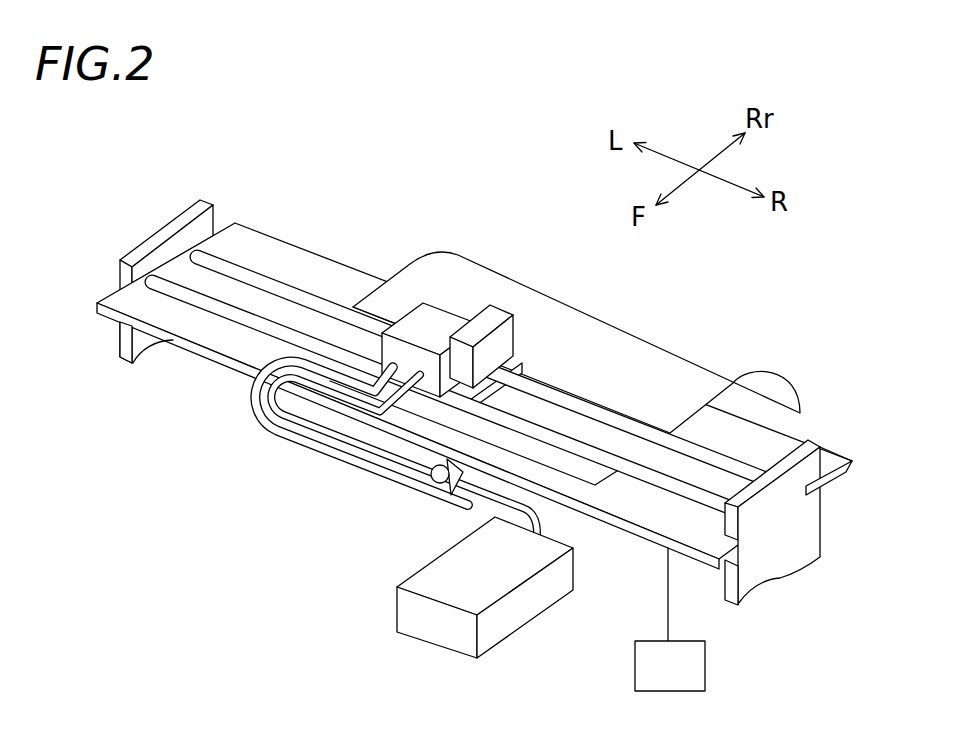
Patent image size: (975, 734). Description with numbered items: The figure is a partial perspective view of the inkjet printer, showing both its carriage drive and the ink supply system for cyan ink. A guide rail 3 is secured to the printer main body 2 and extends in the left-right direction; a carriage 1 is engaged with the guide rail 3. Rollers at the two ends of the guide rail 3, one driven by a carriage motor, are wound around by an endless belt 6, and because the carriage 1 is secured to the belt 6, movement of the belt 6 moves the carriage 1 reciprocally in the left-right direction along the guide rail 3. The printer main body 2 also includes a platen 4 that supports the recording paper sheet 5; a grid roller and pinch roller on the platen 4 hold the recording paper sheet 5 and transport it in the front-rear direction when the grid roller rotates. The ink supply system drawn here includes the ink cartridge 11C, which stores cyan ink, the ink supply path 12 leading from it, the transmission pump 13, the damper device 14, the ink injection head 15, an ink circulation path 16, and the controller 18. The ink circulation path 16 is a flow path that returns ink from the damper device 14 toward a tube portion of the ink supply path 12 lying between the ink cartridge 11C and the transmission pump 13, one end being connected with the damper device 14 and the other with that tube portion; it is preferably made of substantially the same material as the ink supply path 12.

The carriage 1 is at (367, 447).
The printer main body 2 is at (486, 389).
The guide rail 3 is at (265, 278).
The platen 4 is at (330, 275).
The recording paper sheet 5 is at (683, 352).
The endless belt 6 is at (178, 288).
The ink cartridge 11C is at (490, 567).
The ink supply path 12 is at (297, 418).
The transmission pump 13 is at (433, 478).
The damper device 14 is at (425, 313).
The ink injection head 15 is at (500, 312).
The ink circulation path 16 is at (257, 423).
The controller 18 is at (708, 660).